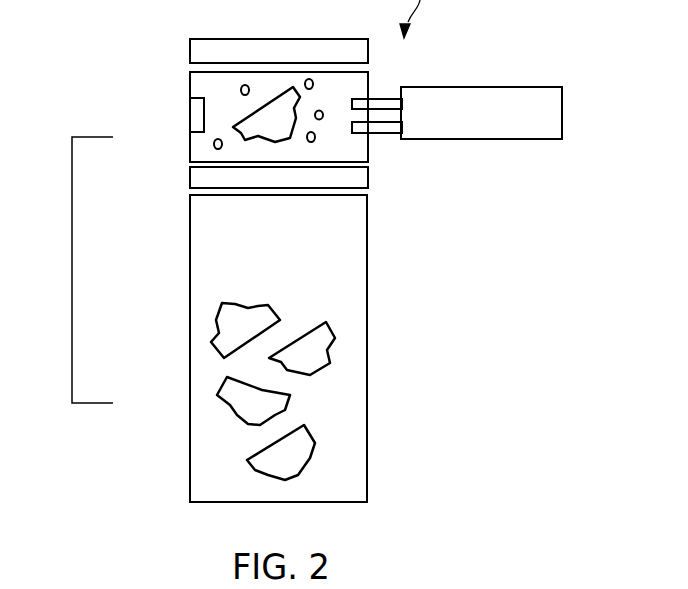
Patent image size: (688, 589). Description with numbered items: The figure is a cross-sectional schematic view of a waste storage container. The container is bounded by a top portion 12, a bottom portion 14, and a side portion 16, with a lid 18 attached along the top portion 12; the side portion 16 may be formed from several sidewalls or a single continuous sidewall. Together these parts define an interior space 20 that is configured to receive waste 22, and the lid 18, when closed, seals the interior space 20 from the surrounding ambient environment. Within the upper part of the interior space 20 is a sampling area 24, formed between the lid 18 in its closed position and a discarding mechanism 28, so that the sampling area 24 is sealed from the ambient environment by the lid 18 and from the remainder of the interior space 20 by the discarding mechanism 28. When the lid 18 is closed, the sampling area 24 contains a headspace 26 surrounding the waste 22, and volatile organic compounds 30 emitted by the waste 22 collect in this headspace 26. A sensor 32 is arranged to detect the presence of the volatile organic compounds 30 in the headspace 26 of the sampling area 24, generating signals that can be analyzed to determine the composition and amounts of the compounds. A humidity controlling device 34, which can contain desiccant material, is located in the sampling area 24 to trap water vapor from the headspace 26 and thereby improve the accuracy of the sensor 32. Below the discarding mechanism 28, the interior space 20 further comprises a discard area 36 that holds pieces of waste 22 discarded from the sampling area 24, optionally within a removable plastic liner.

The top portion 12 is at (190, 91).
The bottom portion 14 is at (367, 502).
The side portion 16 is at (367, 307).
The lid 18 is at (190, 57).
The interior space 20 is at (72, 252).
The waste 22 is at (233, 128).
The sampling area 24 is at (368, 150).
The headspace 26 is at (343, 87).
The discarding mechanism 28 is at (190, 182).
The volatile organic compounds 30 is at (245, 85).
The sensor 32 is at (562, 112).
The humidity controlling device 34 is at (190, 108).
The discard area 36 is at (353, 390).